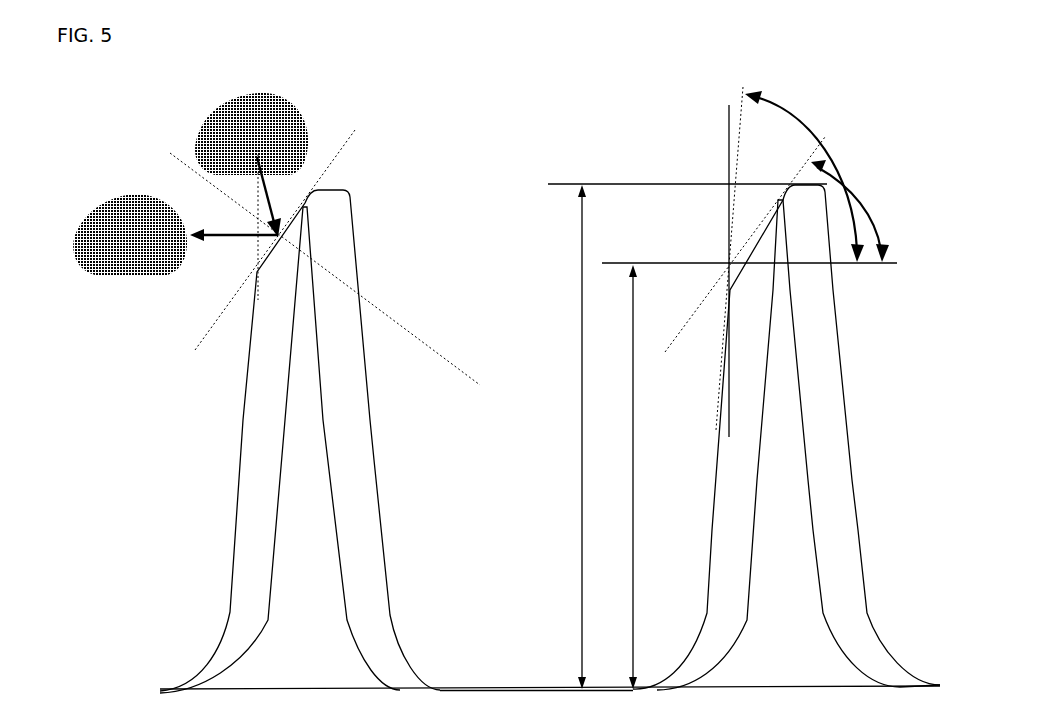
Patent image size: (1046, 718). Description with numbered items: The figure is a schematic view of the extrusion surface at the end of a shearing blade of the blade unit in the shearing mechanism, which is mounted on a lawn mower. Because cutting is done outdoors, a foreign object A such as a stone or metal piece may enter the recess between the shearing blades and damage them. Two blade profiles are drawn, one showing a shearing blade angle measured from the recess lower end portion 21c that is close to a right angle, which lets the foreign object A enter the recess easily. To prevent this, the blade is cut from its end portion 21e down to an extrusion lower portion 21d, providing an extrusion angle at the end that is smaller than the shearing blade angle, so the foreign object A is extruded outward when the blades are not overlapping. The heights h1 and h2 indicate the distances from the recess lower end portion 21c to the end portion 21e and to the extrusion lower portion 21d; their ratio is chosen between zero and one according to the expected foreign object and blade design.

The foreign object A is at (218, 128).
The recess lower end portion 21c is at (508, 688).
The extrusion lower portion 21d is at (729, 263).
The end portion 21e is at (797, 183).
The height of top portion h1 is at (582, 378).
The height of bend point h2 is at (632, 490).